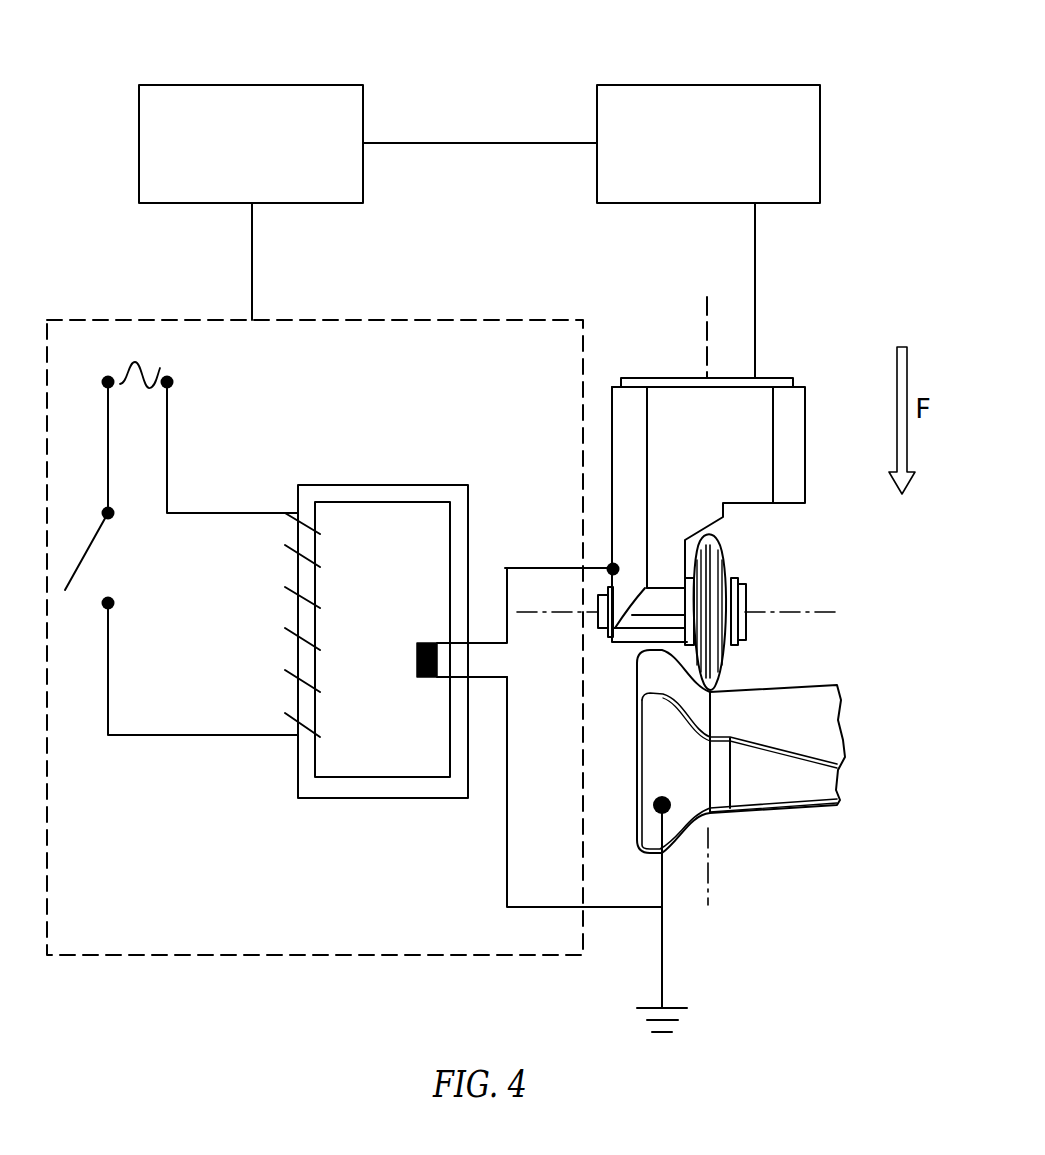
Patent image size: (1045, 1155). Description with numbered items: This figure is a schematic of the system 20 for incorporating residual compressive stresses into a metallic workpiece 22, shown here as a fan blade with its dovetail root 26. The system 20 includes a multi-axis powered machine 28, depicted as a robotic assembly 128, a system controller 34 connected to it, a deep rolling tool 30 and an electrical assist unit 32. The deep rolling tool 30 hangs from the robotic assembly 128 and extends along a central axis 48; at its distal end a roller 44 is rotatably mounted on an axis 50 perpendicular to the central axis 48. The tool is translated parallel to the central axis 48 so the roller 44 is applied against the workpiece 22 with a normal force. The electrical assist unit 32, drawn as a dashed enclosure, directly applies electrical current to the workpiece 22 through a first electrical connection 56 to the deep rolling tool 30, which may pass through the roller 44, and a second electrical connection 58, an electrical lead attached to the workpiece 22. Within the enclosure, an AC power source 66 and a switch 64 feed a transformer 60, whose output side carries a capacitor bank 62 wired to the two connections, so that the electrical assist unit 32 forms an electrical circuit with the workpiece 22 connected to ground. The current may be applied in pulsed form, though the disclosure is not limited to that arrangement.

The system 20 is at (474, 108).
The system controller 34 is at (232, 191).
The multi-axis powered machine 28 is at (708, 231).
The robotic assembly 128 is at (668, 192).
The central axis 48 is at (702, 307).
The deep rolling tool 30 is at (803, 360).
The axis 50 is at (818, 611).
The roller 44 is at (722, 675).
The first electrical connection 56 is at (618, 566).
The workpiece 22 is at (838, 675).
The dovetail root 26 is at (658, 783).
The second electrical connection 58 is at (653, 811).
The electrical assist unit 32 is at (182, 957).
The AC power source 66 is at (137, 362).
The switch 64 is at (110, 563).
The transformer 60 is at (382, 806).
The capacitor bank 62 is at (483, 681).